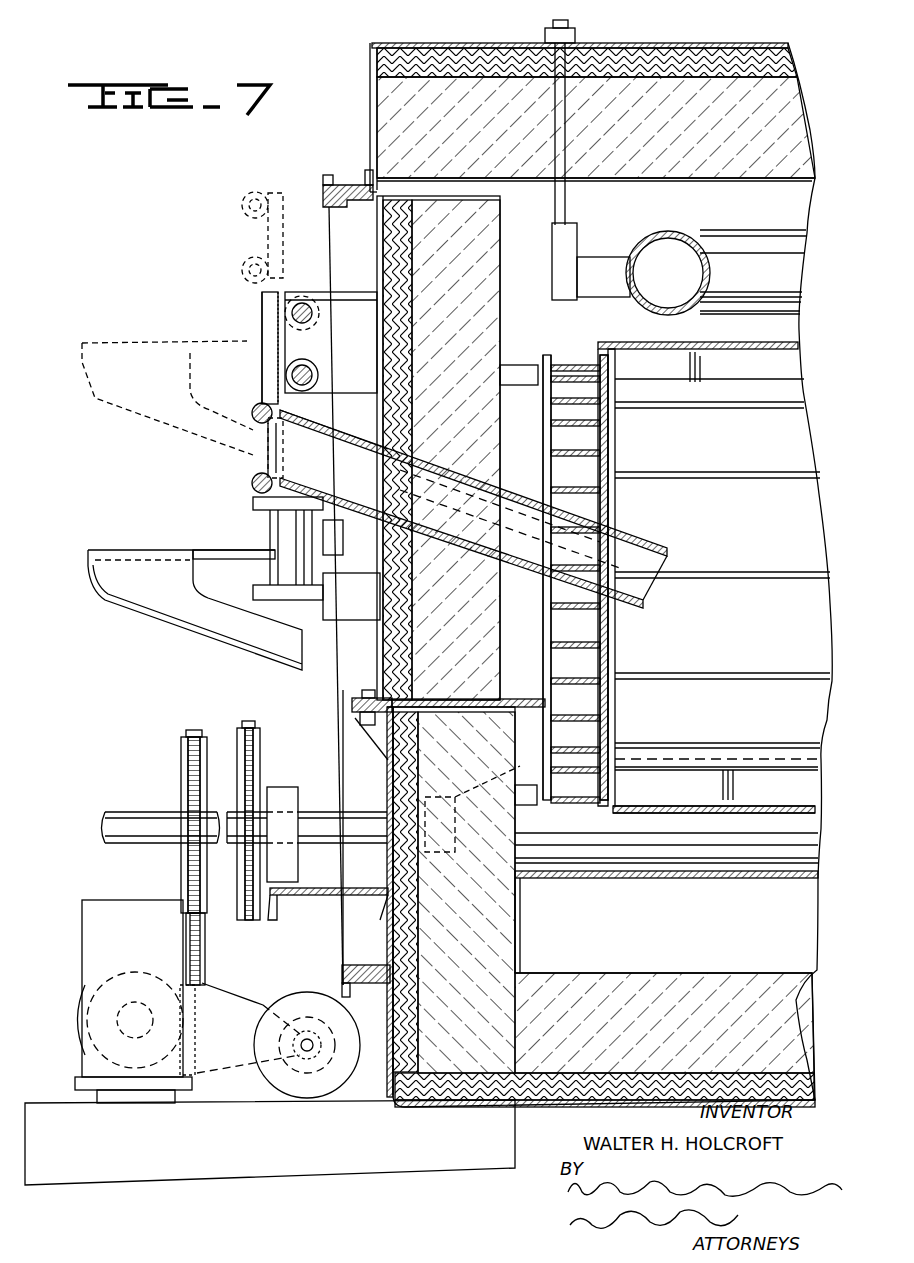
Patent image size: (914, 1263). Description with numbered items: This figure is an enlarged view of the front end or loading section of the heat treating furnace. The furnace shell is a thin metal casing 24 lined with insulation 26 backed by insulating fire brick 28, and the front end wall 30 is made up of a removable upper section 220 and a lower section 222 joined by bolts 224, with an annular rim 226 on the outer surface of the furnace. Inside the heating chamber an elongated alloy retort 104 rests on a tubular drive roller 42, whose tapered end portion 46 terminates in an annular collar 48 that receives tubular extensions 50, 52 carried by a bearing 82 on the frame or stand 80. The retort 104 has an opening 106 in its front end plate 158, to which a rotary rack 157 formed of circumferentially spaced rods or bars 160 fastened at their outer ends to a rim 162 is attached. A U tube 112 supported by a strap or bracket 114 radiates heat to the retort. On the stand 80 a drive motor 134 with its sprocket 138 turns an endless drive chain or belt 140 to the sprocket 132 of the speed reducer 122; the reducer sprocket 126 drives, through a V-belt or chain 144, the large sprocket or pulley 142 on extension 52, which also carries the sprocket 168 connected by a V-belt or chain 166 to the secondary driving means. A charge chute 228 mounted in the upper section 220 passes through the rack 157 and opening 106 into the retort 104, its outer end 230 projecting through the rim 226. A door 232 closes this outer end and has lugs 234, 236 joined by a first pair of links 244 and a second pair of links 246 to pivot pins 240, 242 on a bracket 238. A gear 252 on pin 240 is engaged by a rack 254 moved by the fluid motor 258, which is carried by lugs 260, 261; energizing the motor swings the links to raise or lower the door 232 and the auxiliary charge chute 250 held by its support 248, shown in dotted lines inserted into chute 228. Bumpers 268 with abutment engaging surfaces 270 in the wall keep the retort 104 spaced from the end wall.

The metal casing 24 is at (655, 45).
The insulation 26 is at (788, 62).
The insulating fire brick 28 is at (800, 128).
The front end wall 30 is at (520, 940).
The tubular drive roller 42 is at (680, 878).
The end portion 46 is at (522, 896).
The annular collar 48 is at (388, 778).
The tubular extension 50 is at (327, 810).
The tubular extension 52 is at (106, 818).
The frame or stand 80 is at (388, 1175).
The bearing 82 is at (288, 787).
The alloy retort 104 is at (632, 346).
The opening 106 is at (608, 496).
The U tube 112 is at (722, 232).
The strap or bracket 114 is at (553, 203).
The speed reducer 122 is at (82, 950).
The sprocket 126 is at (207, 946).
The sprocket 132 is at (190, 1030).
The drive motor 134 is at (330, 1085).
The sprocket 138 is at (292, 1045).
The endless drive chain or belt 140 is at (258, 1010).
The large sprocket or pulley 142 is at (188, 768).
The V-belt or chain 144 is at (192, 735).
The rotary rack 157 is at (543, 680).
The front end plate 158 is at (612, 706).
The rods or bars 160 is at (610, 434).
The rim 162 is at (550, 724).
The V-belt or chain 166 is at (258, 728).
The sprocket 168 is at (246, 735).
The removable upper section 220 is at (485, 300).
The lower section 222 is at (376, 983).
The bolts 224 is at (352, 694).
The annular rim 226 is at (326, 200).
The charge chute 228 is at (640, 545).
The outer end of chute 230 is at (290, 424).
The door 232 is at (265, 234).
The lugs 234 is at (252, 416).
The lugs 236 is at (252, 485).
The bracket 238 is at (335, 288).
The pivot pin 240 is at (314, 318).
The pivot pin 242 is at (318, 372).
The first pair of links 244 is at (268, 405).
The second pair of links 246 is at (262, 470).
The support 248 is at (225, 548).
The auxiliary charge chute 250 is at (92, 398).
The gear 252 is at (262, 297).
The rack 254 is at (262, 320).
The air cylinder or fluid motor 258 is at (262, 522).
The lug 260 is at (334, 540).
The lug 261 is at (334, 628).
The bumpers 268 is at (515, 372).
The abutment engaging surfaces 270 is at (530, 365).